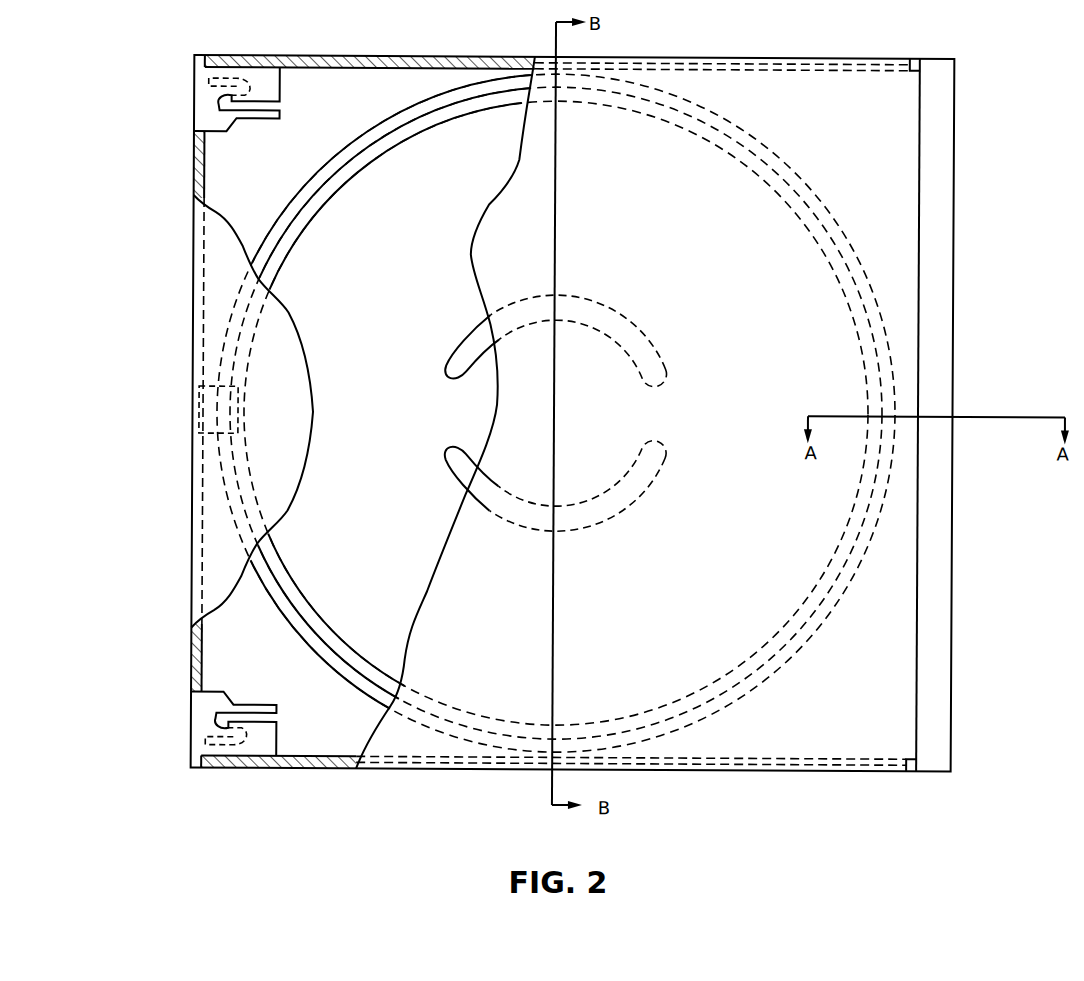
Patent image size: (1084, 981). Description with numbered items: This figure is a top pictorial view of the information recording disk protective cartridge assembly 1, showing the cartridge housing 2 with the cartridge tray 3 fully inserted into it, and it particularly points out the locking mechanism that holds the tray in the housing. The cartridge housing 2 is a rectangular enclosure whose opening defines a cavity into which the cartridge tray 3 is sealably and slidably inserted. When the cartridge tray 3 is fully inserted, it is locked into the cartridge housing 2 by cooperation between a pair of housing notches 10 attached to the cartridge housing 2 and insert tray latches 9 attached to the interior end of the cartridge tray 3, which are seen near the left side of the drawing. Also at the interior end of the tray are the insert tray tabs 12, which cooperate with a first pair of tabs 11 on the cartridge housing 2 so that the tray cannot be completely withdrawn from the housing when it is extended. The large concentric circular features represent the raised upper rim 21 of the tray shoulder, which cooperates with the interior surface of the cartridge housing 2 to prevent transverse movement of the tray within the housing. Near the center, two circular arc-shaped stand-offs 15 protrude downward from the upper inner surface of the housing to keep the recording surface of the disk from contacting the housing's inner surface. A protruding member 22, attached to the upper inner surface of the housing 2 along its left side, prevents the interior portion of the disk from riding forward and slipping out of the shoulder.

The information recording disk protective cartridge assembly 1 is at (460, 810).
The cartridge housing 2 is at (833, 97).
The cartridge tray 3 is at (757, 58).
The insert tray latches 9 is at (250, 80).
The housing notches 10 is at (217, 112).
The first pair of tabs 11 is at (913, 62).
The insert tray tabs 12 is at (200, 56).
The circular arc-shaped stand-offs 15 is at (587, 302).
The raised upper rim 21 is at (835, 153).
The protruding member 22 is at (199, 408).